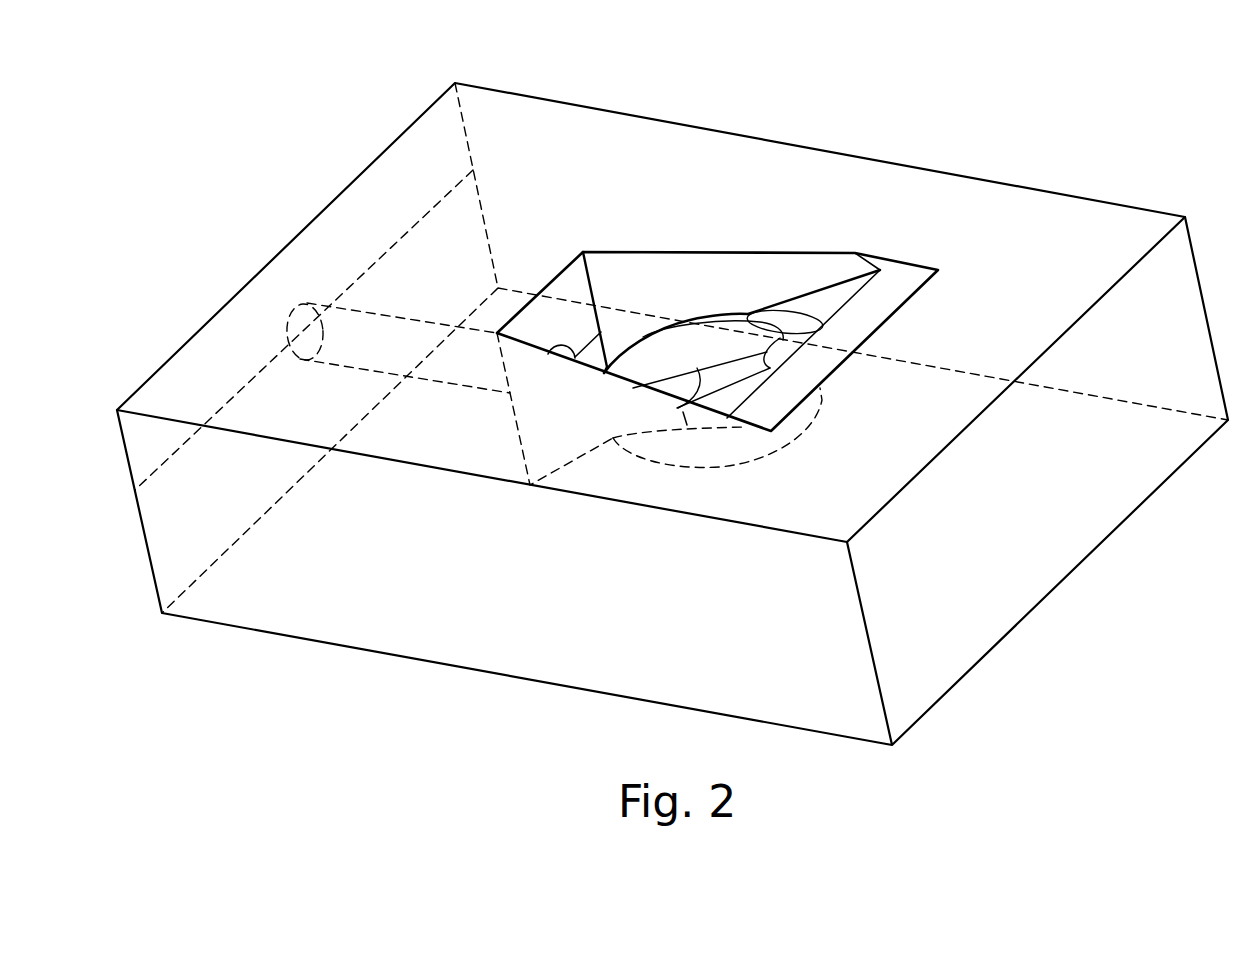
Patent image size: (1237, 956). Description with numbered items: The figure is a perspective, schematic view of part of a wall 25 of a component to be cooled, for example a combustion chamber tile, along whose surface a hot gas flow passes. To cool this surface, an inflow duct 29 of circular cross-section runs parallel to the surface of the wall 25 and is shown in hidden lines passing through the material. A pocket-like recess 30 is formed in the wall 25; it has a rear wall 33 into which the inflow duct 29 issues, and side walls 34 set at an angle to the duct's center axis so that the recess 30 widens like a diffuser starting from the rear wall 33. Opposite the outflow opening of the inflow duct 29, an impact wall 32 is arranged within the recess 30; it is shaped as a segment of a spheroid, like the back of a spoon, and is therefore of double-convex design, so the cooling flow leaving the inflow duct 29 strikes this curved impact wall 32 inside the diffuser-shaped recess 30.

The wall 25 is at (1035, 228).
The inflow duct 29 is at (363, 337).
The recess 30 is at (635, 280).
The impact wall 32 is at (684, 345).
The rear wall 33 is at (558, 303).
The side walls 34 is at (756, 273).